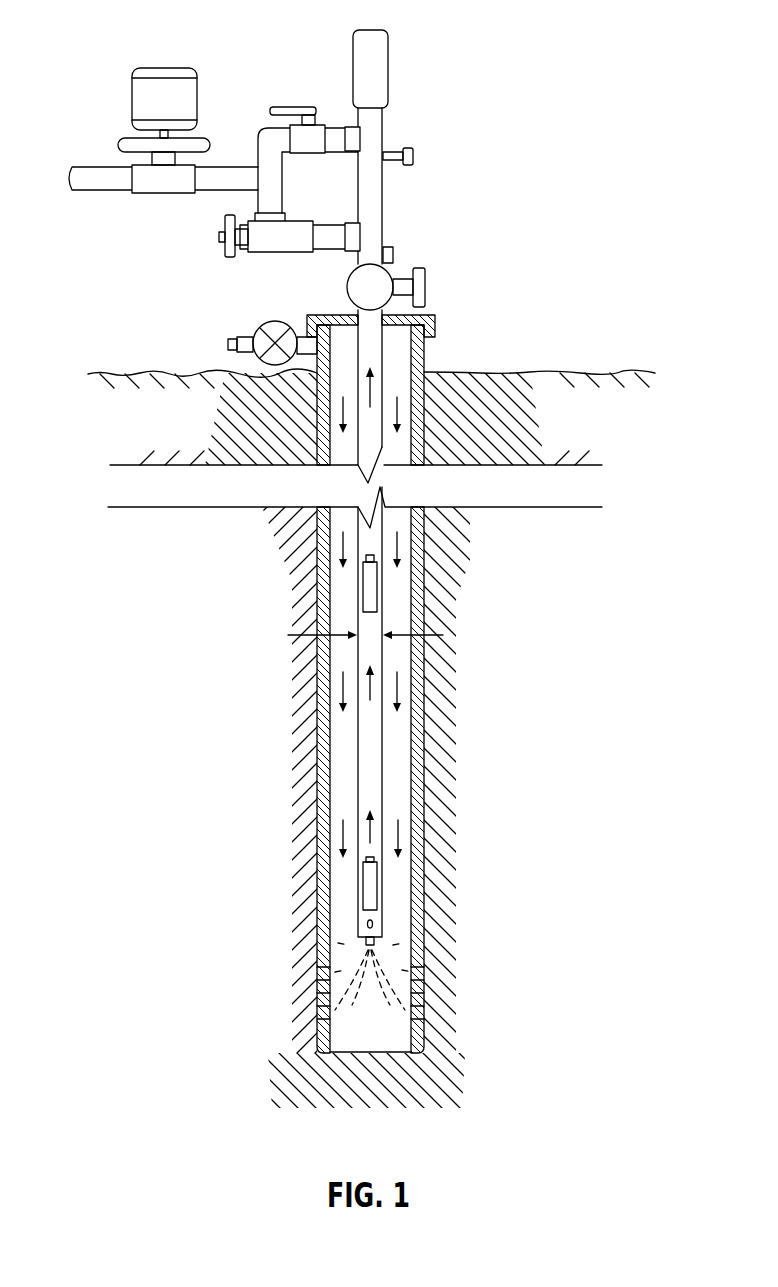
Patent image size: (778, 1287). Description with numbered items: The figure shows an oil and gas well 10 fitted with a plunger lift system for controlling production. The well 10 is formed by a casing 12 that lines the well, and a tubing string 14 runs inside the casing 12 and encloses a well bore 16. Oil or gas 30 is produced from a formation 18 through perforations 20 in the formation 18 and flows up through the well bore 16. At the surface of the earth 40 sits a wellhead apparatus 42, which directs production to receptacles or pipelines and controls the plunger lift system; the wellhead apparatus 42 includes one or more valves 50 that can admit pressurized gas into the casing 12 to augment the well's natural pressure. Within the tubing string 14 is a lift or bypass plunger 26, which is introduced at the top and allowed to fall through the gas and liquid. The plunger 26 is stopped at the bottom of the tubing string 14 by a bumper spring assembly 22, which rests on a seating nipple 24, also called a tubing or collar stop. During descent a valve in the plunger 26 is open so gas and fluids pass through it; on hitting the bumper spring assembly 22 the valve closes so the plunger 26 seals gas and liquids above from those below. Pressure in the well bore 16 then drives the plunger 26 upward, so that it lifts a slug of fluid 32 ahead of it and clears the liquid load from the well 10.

The well 10 is at (550, 622).
The casing 12 is at (448, 815).
The tubing string 14 is at (382, 765).
The well bore 16 is at (441, 638).
The formation 18 is at (440, 1072).
The perforations 20 is at (337, 998).
The bumper spring assembly 22 is at (372, 890).
The seating nipple 24 is at (385, 922).
The plunger 26 is at (373, 580).
The oil or gas 30 is at (367, 748).
The slug of fluid 32 is at (372, 535).
The surface of the earth 40 is at (548, 372).
The wellhead apparatus 42 is at (478, 28).
The valve 50 is at (277, 321).